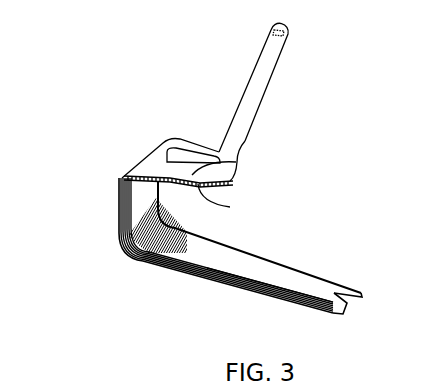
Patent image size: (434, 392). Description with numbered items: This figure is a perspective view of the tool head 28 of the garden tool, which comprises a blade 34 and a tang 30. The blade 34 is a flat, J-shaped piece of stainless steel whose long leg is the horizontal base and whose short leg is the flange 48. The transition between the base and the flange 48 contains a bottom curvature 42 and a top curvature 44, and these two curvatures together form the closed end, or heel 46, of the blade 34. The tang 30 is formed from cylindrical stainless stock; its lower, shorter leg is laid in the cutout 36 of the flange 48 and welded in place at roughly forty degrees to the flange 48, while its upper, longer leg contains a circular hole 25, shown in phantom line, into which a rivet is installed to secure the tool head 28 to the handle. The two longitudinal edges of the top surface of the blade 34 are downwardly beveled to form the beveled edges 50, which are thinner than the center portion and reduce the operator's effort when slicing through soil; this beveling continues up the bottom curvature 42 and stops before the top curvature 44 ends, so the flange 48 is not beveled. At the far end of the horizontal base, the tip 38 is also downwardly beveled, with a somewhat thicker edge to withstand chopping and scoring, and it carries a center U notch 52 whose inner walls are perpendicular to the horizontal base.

The hole 25 is at (290, 33).
The tool head 28 is at (163, 119).
The tang 30 is at (262, 120).
The blade 34 is at (279, 240).
The cutout 36 is at (230, 207).
The tip 38 is at (369, 291).
The bottom curvature 42 is at (118, 237).
The top curvature 44 is at (112, 181).
The heel 46 is at (60, 207).
The flange 48 is at (240, 172).
The beveled edges 50 is at (221, 283).
The U notch 52 is at (348, 301).